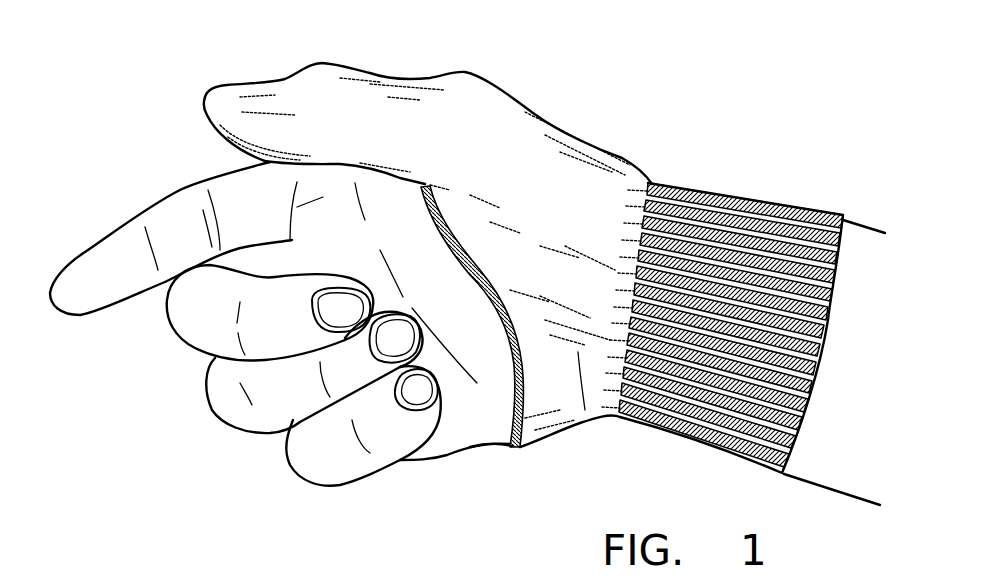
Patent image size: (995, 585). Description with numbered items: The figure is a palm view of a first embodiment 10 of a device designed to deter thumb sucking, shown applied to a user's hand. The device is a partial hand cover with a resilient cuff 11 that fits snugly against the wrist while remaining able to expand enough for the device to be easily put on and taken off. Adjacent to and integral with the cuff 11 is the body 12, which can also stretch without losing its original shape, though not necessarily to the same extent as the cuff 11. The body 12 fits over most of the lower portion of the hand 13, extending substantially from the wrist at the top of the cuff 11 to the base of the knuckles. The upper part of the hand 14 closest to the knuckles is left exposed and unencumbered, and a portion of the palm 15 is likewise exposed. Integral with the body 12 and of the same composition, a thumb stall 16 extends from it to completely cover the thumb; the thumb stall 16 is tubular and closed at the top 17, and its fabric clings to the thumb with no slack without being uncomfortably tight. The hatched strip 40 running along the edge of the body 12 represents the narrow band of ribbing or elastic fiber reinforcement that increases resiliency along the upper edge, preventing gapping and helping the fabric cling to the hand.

The first embodiment 10 is at (599, 97).
The cuff 11 is at (748, 230).
The body 12 is at (585, 410).
The lower portion of the hand 13 is at (507, 420).
The upper part of the hand 14 is at (257, 200).
The palm 15 is at (472, 332).
The thumb stall 16 is at (365, 97).
The top 17 is at (207, 100).
The reinforcing strip 40 is at (523, 392).